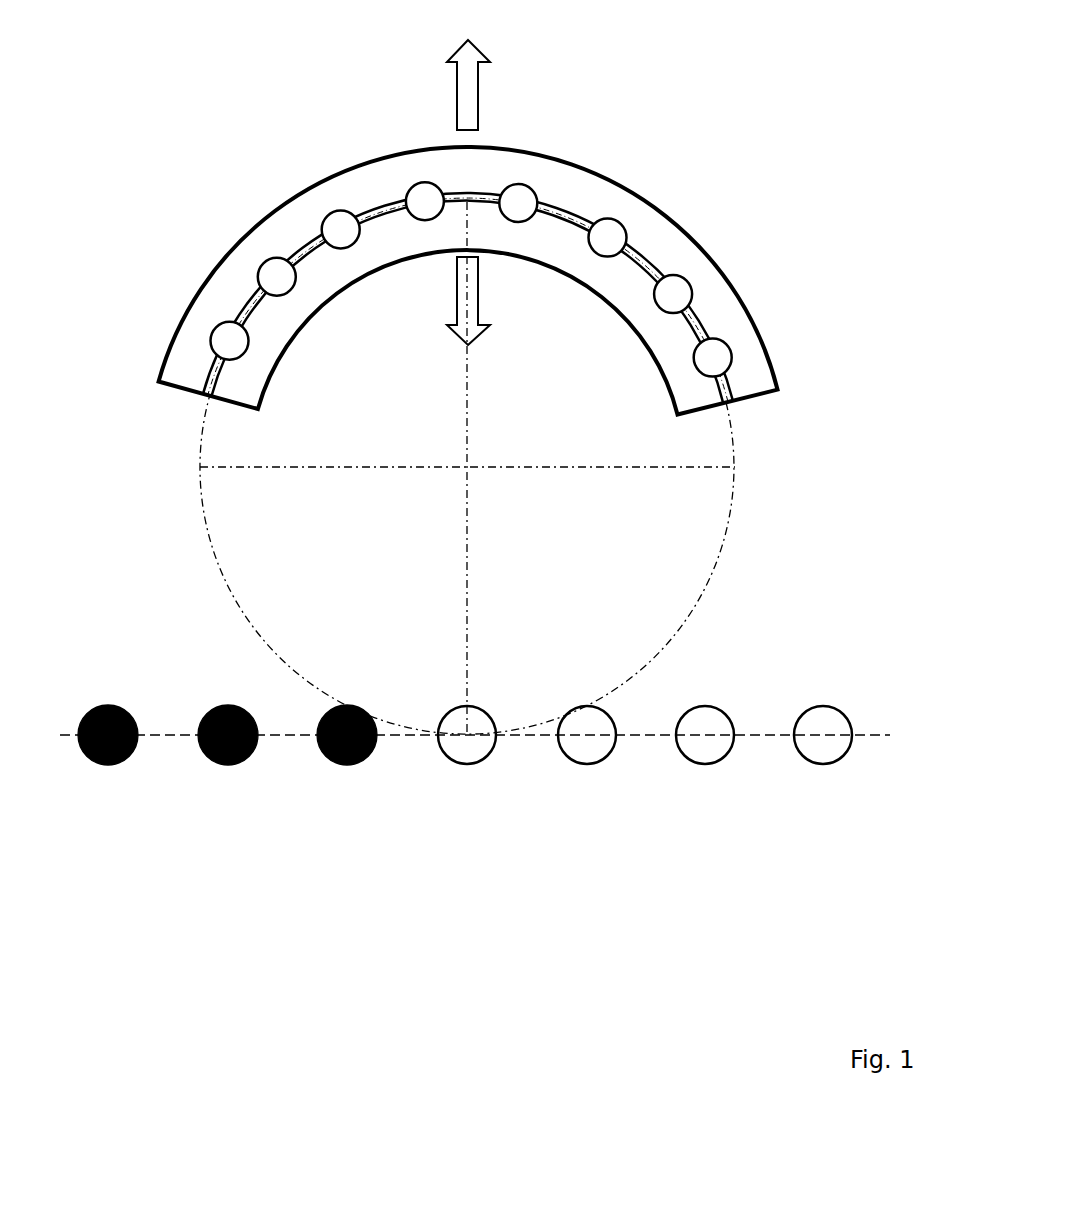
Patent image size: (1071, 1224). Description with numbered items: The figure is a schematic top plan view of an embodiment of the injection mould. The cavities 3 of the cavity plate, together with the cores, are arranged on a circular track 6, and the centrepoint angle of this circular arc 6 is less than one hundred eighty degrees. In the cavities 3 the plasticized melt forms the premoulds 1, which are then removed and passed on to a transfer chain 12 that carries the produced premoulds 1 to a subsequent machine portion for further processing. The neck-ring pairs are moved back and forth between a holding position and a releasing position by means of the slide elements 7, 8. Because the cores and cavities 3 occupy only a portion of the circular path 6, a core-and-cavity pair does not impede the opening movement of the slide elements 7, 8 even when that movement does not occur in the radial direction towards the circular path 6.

The premould 1 is at (353, 763).
The cavity 3 is at (343, 228).
The circular track 6 is at (702, 598).
The slide element 7 is at (198, 332).
The slide element 8 is at (250, 394).
The transfer chain 12 is at (645, 784).